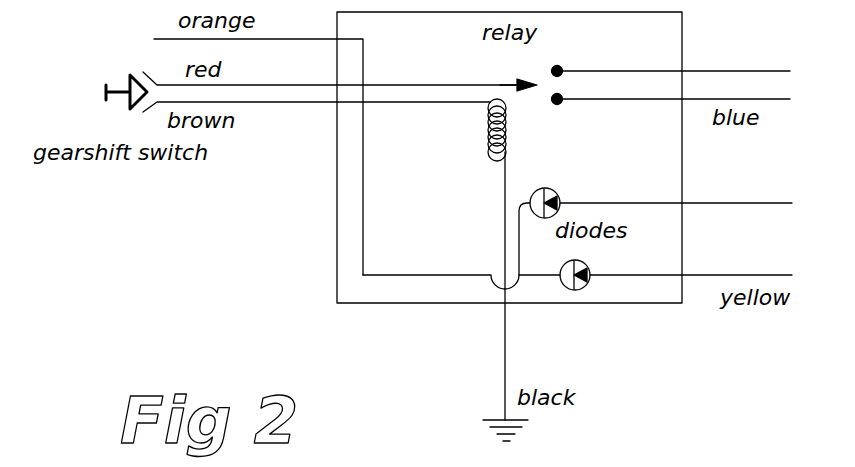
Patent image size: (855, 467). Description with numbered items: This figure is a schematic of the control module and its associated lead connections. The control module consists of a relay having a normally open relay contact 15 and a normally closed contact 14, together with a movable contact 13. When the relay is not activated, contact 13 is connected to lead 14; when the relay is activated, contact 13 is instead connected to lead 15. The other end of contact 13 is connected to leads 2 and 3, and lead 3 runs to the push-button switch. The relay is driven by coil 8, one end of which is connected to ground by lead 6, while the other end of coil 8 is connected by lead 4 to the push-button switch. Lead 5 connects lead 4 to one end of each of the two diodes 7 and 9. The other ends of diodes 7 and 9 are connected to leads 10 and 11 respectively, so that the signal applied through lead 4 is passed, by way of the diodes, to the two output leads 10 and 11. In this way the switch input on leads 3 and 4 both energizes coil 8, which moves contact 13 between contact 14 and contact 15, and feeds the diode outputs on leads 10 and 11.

The lead 2 is at (325, 37).
The lead 3 is at (275, 80).
The lead 4 is at (273, 103).
The lead 5 is at (440, 272).
The lead 6 is at (502, 320).
The diode 7 is at (582, 260).
The coil 8 is at (487, 140).
The diode 9 is at (540, 187).
The lead 10 is at (712, 203).
The lead 11 is at (718, 275).
The contact 13 is at (463, 82).
The normally closed contact 14 is at (662, 70).
The normally open relay contact 15 is at (662, 101).